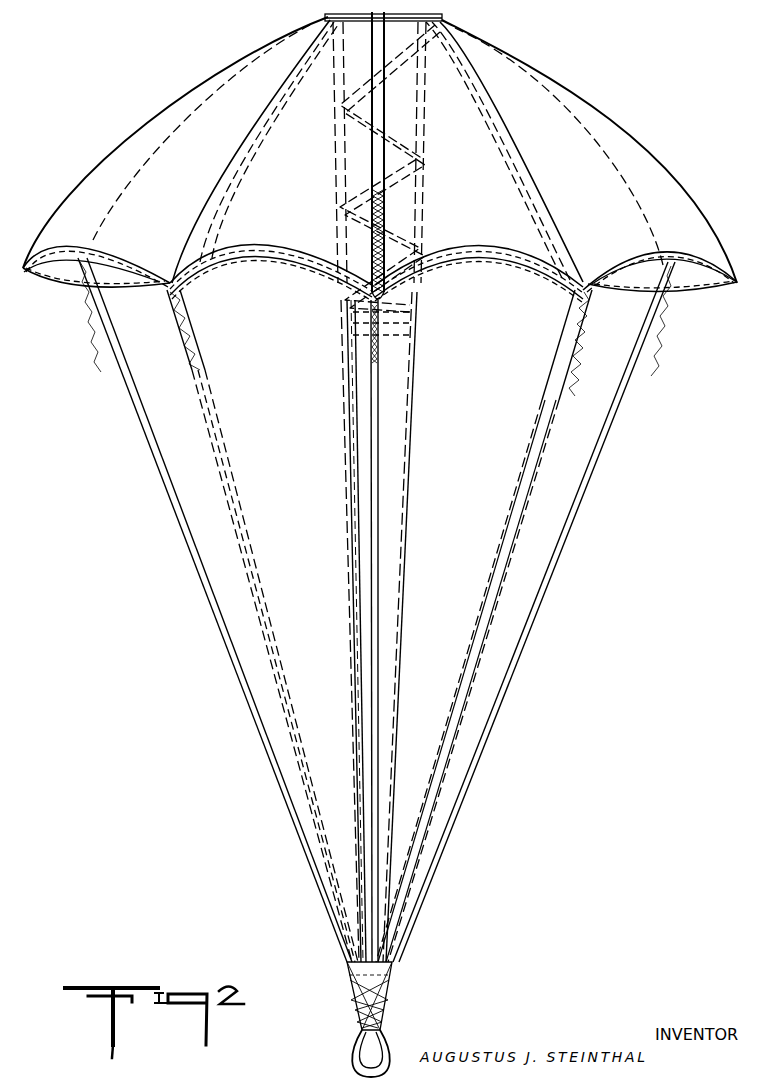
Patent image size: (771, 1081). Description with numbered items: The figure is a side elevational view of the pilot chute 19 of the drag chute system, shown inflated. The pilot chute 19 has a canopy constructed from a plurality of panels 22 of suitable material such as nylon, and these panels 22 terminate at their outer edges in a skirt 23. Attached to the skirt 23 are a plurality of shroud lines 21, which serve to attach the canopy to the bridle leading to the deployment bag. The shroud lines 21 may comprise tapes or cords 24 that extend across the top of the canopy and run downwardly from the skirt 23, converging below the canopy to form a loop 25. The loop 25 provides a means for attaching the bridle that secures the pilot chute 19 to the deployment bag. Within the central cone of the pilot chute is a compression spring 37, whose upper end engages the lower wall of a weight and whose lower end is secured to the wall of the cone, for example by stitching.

The pilot chute 19 is at (724, 234).
The shroud lines 21 is at (192, 550).
The panels 22 is at (487, 225).
The skirt 23 is at (494, 264).
The tapes or cords 24 is at (237, 187).
The loop 25 is at (360, 1045).
The compression spring 37 is at (404, 178).